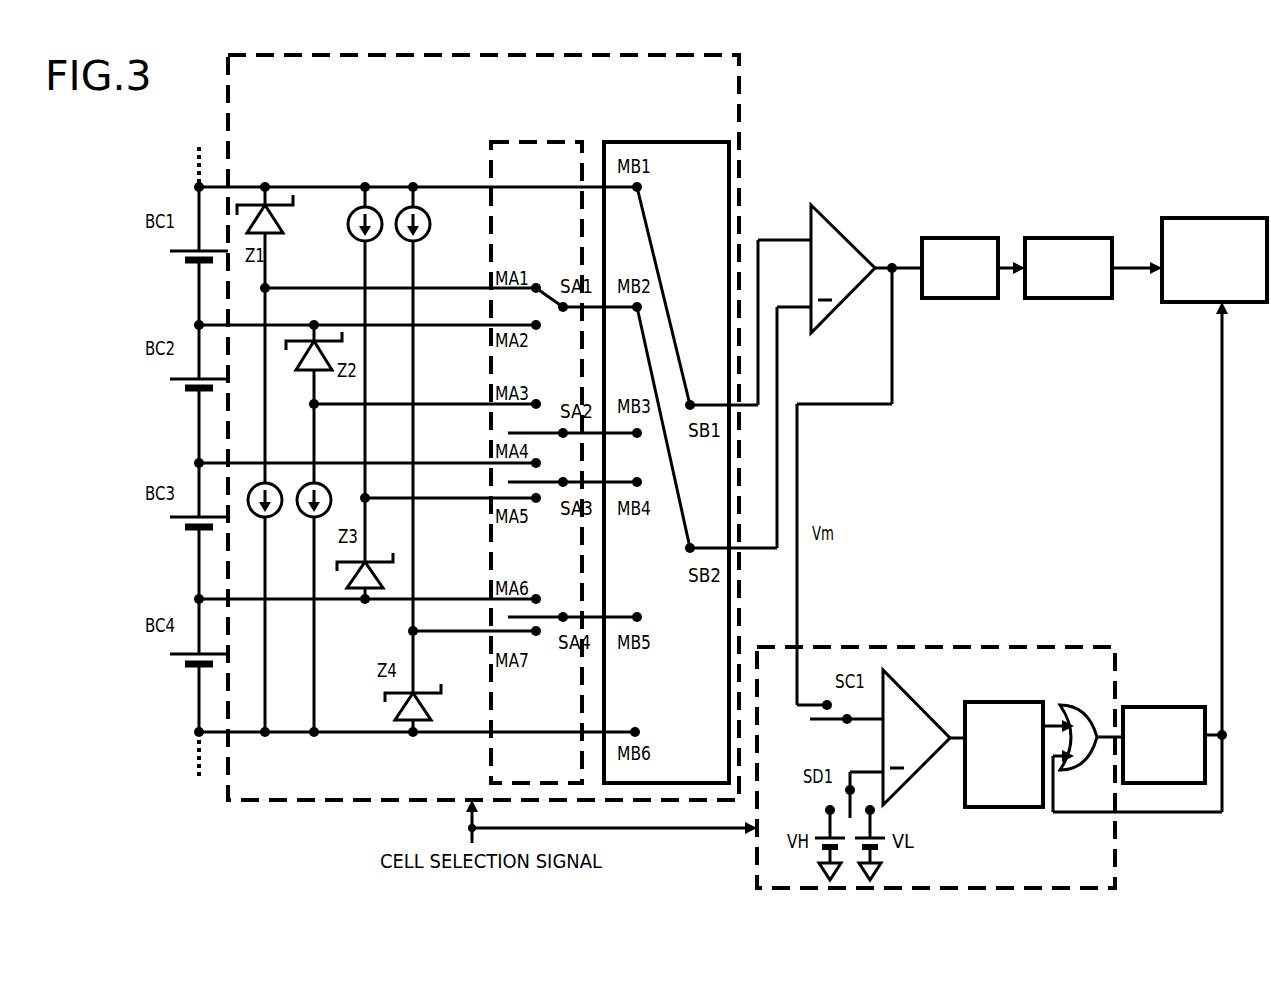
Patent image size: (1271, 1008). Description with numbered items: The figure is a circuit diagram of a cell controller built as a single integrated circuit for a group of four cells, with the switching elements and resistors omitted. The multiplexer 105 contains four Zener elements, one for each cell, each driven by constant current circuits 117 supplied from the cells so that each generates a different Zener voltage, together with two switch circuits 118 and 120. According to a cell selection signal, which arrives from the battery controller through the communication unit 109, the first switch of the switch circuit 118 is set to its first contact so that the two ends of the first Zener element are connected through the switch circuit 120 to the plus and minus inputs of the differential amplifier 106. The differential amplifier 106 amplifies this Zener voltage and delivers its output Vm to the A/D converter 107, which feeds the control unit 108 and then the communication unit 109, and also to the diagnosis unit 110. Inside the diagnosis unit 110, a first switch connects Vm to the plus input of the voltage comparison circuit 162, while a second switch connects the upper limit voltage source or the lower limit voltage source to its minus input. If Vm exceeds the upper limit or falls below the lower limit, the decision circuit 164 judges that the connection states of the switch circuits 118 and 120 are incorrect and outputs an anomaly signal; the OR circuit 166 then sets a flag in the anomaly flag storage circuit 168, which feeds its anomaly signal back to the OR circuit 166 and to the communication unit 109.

The multiplexer 105 is at (742, 83).
The differential amplifier 106 is at (837, 223).
The A/D converter 107 is at (948, 238).
The control unit 108 is at (1085, 238).
The communication unit 109 is at (1188, 218).
The diagnosis unit 110 is at (1117, 848).
The constant current circuits 117 is at (358, 207).
The switch circuit 118 is at (540, 140).
The switch circuit 120 is at (672, 140).
The voltage comparison circuit 162 is at (907, 690).
The decision circuit 164 is at (993, 702).
The OR circuit 166 is at (1087, 704).
The anomaly flag storage circuit 168 is at (1153, 707).